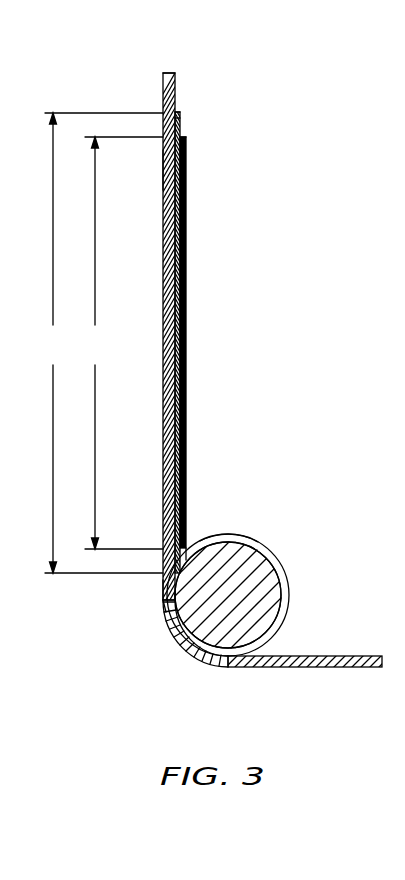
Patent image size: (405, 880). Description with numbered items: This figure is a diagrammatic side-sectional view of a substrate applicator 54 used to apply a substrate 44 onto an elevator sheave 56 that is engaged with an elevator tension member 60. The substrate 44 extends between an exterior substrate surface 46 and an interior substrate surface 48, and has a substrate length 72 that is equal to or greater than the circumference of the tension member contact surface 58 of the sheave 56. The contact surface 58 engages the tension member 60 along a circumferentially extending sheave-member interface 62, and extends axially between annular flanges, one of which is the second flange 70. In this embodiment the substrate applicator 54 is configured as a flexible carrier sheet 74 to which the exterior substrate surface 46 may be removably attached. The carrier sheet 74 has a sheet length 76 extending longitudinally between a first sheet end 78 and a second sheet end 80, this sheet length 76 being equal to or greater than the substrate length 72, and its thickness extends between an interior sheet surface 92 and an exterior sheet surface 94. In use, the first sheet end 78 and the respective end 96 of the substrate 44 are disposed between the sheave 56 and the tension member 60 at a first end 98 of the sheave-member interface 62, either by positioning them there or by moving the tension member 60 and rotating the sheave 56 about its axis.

The substrate 44 is at (185, 418).
The exterior substrate surface 46 is at (177, 225).
The interior substrate surface 48 is at (185, 218).
The substrate applicator 54 is at (212, 276).
The sheave 56 is at (292, 563).
The tension member contact surface 58 is at (279, 600).
The tension member 60 is at (175, 82).
The sheave-member interface 62 is at (192, 657).
The second flange 70 is at (258, 541).
The substrate length 72 is at (123, 343).
The carrier sheet 74 is at (178, 124).
The sheet length 76 is at (103, 343).
The first sheet end 78 is at (162, 590).
The second sheet end 80 is at (177, 101).
The interior sheet surface 92 is at (181, 136).
The exterior sheet surface 94 is at (166, 168).
The substrate end 96 is at (200, 540).
The first end of the sheave-member interface 98 is at (161, 606).